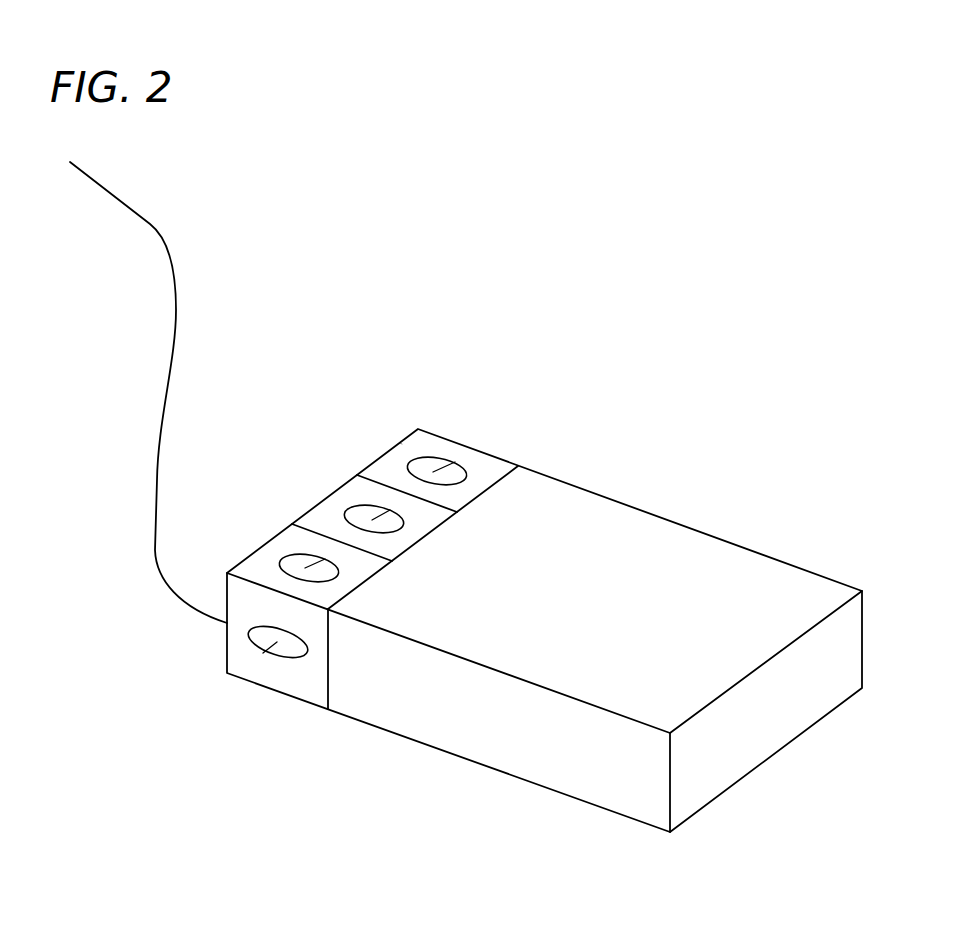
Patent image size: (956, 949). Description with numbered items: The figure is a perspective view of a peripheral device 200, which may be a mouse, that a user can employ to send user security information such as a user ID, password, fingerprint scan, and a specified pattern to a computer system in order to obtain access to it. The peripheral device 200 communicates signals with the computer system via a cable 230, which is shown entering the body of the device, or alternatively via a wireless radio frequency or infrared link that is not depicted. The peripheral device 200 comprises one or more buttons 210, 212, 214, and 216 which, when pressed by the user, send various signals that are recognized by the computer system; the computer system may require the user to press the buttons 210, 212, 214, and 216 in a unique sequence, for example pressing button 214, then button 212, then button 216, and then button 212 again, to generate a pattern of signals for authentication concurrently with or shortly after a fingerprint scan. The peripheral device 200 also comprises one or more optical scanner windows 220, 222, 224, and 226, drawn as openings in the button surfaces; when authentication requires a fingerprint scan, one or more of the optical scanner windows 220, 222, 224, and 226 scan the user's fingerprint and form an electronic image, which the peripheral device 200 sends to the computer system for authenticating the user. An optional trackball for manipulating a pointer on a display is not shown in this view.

The peripheral device 200 is at (360, 116).
The button 210 is at (240, 653).
The button 212 is at (262, 563).
The button 214 is at (325, 513).
The button 216 is at (389, 467).
The optical scanner window 220 is at (263, 652).
The optical scanner window 222 is at (325, 559).
The optical scanner window 224 is at (390, 510).
The optical scanner window 226 is at (453, 462).
The cable 230 is at (153, 221).